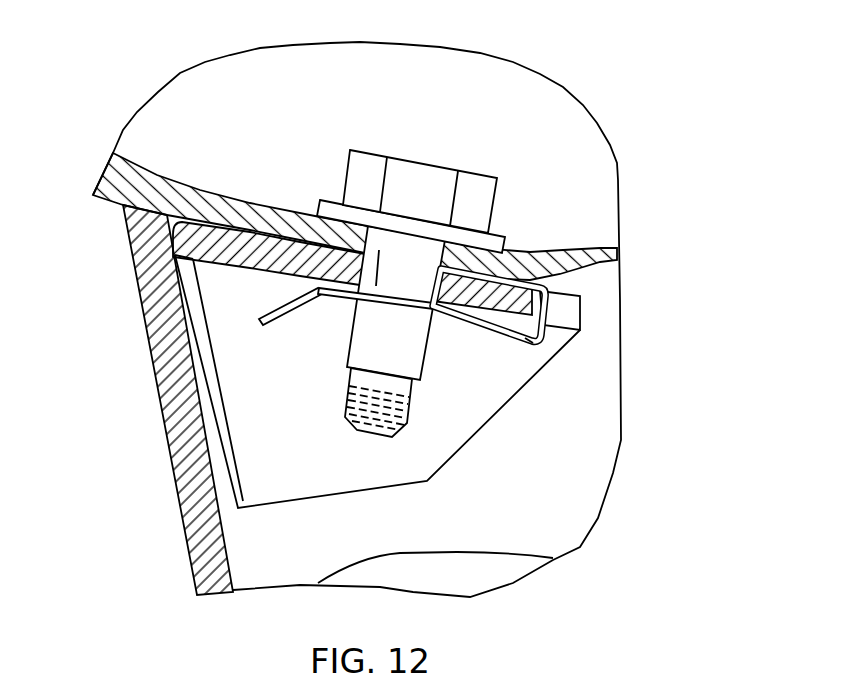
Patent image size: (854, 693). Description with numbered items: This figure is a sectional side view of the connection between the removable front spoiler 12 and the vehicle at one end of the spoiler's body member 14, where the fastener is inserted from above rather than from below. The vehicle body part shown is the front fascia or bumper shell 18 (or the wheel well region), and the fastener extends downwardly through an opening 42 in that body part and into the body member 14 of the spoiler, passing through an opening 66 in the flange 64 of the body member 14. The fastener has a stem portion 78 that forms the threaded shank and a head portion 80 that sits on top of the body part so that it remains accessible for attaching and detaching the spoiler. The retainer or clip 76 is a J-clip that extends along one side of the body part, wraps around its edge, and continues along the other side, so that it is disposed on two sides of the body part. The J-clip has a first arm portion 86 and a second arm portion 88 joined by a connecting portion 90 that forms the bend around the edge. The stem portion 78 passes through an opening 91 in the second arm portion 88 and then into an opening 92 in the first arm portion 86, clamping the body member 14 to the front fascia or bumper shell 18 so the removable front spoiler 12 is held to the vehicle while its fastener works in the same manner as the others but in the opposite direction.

The removable front spoiler 12 is at (606, 522).
The body member 14 is at (185, 537).
The front fascia or bumper shell 18 is at (155, 132).
The opening 42 is at (373, 240).
The flange 64 is at (563, 308).
The opening 66 is at (437, 285).
The retainer or clip 76 is at (278, 323).
The stem portion 78 is at (345, 398).
The head portion 80 is at (500, 192).
The first arm portion 86 is at (320, 297).
The second arm portion 88 is at (285, 237).
The connecting portion 90 is at (543, 333).
The opening 91 is at (447, 262).
The opening 92 is at (384, 300).